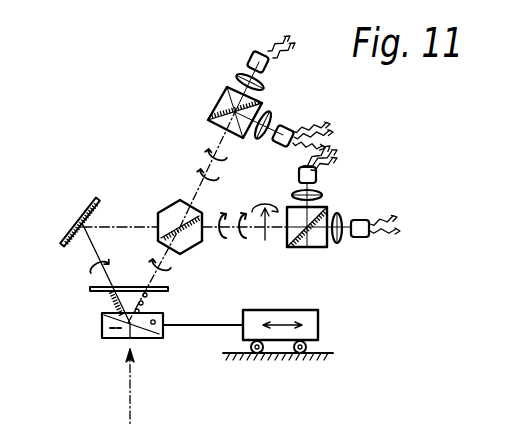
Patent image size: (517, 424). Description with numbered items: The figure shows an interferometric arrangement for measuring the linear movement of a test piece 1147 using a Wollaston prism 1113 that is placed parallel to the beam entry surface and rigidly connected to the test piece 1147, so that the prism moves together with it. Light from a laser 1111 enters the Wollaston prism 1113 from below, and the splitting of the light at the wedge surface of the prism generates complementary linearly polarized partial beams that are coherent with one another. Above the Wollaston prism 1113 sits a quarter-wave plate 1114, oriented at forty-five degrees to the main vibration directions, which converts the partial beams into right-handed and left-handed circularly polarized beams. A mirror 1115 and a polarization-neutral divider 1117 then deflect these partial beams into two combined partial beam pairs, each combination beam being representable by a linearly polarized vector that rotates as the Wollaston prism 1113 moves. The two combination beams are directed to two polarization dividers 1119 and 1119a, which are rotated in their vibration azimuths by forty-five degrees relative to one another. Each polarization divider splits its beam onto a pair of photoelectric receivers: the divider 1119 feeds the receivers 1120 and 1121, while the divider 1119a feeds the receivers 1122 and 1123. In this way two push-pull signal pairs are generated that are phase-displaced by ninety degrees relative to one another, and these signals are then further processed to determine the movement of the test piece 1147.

The laser 1111 is at (130, 387).
The Wollaston prism 1113 is at (102, 323).
The λ/4 plate 1114 is at (90, 294).
The mirror 1115 is at (72, 222).
The polarization-neutral divider 1117 is at (165, 211).
The polarization divider 1119 is at (310, 247).
The polarization divider 1119a is at (221, 98).
The photoelectric receiver 1120 is at (360, 237).
The photoelectric receiver 1121 is at (316, 175).
The photoelectric receiver 1122 is at (282, 127).
The photoelectric receiver 1123 is at (250, 56).
The test piece 1147 is at (318, 328).